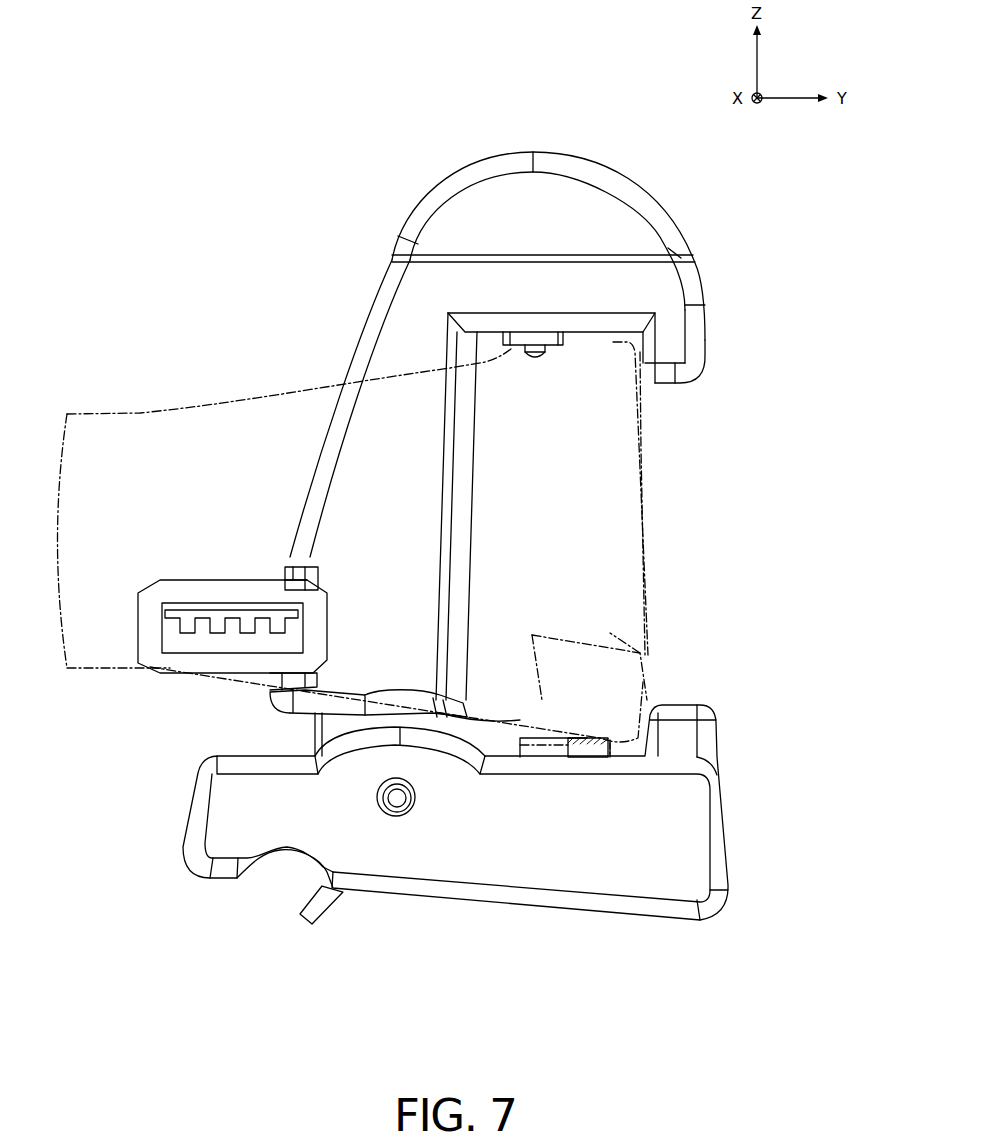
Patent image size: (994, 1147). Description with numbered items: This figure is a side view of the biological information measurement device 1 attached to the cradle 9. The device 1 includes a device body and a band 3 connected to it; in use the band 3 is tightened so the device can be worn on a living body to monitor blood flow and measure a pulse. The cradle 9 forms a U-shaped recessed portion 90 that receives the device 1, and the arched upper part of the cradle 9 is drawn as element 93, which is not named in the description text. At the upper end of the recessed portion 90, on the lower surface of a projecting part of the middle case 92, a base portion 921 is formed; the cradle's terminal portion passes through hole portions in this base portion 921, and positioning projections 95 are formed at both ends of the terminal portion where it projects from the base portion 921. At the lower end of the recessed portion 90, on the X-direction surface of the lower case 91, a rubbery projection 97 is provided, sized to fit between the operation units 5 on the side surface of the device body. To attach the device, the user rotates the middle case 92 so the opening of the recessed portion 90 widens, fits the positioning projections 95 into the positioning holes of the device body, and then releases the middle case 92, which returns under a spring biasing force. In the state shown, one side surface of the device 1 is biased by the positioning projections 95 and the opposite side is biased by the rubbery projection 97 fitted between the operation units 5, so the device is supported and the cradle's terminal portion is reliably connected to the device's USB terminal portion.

The biological information measurement device 1 is at (138, 348).
The band 3 is at (113, 672).
The operation units 5 is at (532, 750).
The cradle 9 is at (491, 396).
The recessed portion 90 is at (504, 729).
The lower case 91 is at (575, 902).
The middle case 92 is at (380, 277).
The base portion 921 is at (505, 338).
The arch portion 93 is at (585, 152).
The positioning projections 95 is at (535, 363).
The rubbery projection 97 is at (590, 752).